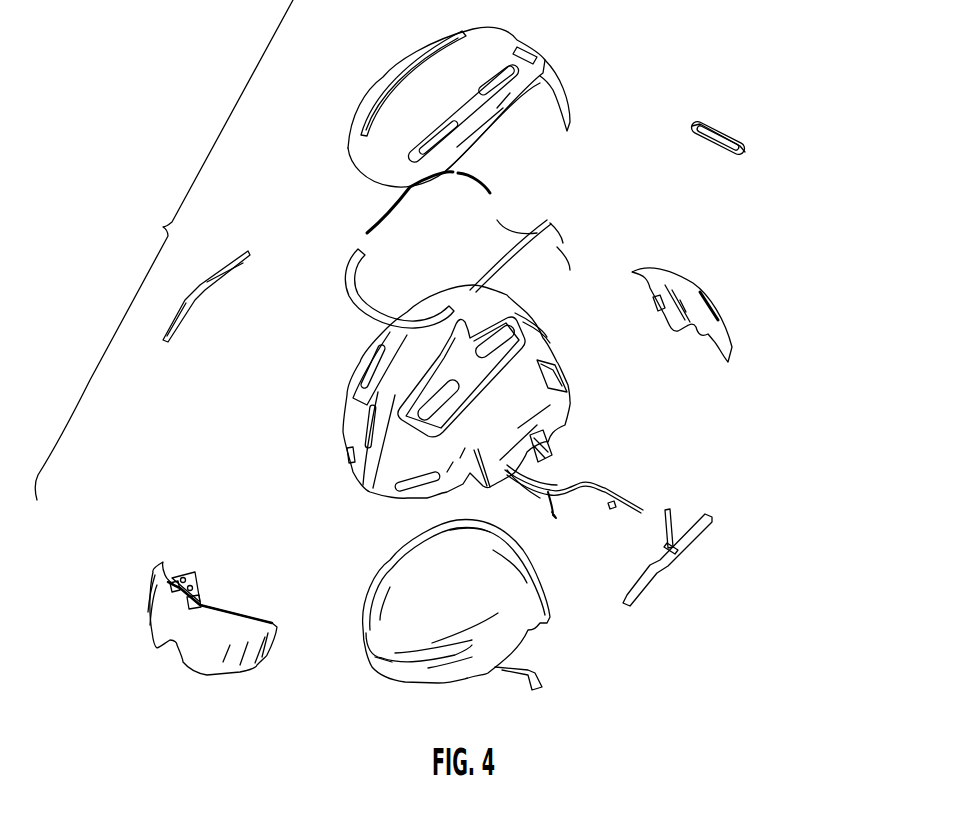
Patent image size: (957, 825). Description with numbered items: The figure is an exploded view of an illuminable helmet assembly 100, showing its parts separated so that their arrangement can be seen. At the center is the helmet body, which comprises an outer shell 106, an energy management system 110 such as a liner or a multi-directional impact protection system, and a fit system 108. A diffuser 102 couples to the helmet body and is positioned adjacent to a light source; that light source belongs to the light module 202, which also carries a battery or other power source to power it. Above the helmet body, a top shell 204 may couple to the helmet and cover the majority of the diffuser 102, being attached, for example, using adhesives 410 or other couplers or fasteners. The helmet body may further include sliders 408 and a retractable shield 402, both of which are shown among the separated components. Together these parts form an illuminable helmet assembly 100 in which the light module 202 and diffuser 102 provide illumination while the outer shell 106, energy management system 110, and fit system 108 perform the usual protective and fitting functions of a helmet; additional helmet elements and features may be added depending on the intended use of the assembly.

The illuminable helmet assembly 100 is at (164, 250).
The diffuser 102 is at (690, 280).
The outer shell 106 is at (415, 362).
The fit system 108 is at (553, 515).
The energy management system 110 is at (438, 572).
The light module 202 is at (724, 128).
The top shell 204 is at (573, 119).
The retractable shield 402 is at (173, 605).
The sliders 408 is at (208, 275).
The adhesives 410 is at (372, 222).